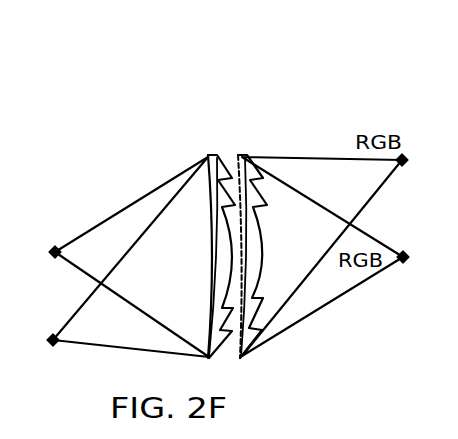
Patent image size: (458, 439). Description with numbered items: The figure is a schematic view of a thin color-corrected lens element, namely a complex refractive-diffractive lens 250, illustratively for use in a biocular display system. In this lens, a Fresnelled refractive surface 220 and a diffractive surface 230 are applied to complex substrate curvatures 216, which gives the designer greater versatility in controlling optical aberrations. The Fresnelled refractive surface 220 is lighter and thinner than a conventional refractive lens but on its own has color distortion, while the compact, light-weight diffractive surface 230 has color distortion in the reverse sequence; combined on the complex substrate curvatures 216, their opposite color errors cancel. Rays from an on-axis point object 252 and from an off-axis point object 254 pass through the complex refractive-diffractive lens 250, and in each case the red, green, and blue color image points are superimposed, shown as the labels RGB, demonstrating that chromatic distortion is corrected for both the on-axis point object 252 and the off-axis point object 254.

The complex refractive-diffractive lens 250 is at (244, 202).
The Fresnelled refractive surface 220 is at (221, 152).
The diffractive surface 230 is at (233, 152).
The complex substrate curvatures 216 is at (217, 215).
The on-axis point object 252 is at (55, 248).
The off-axis point object 254 is at (53, 345).